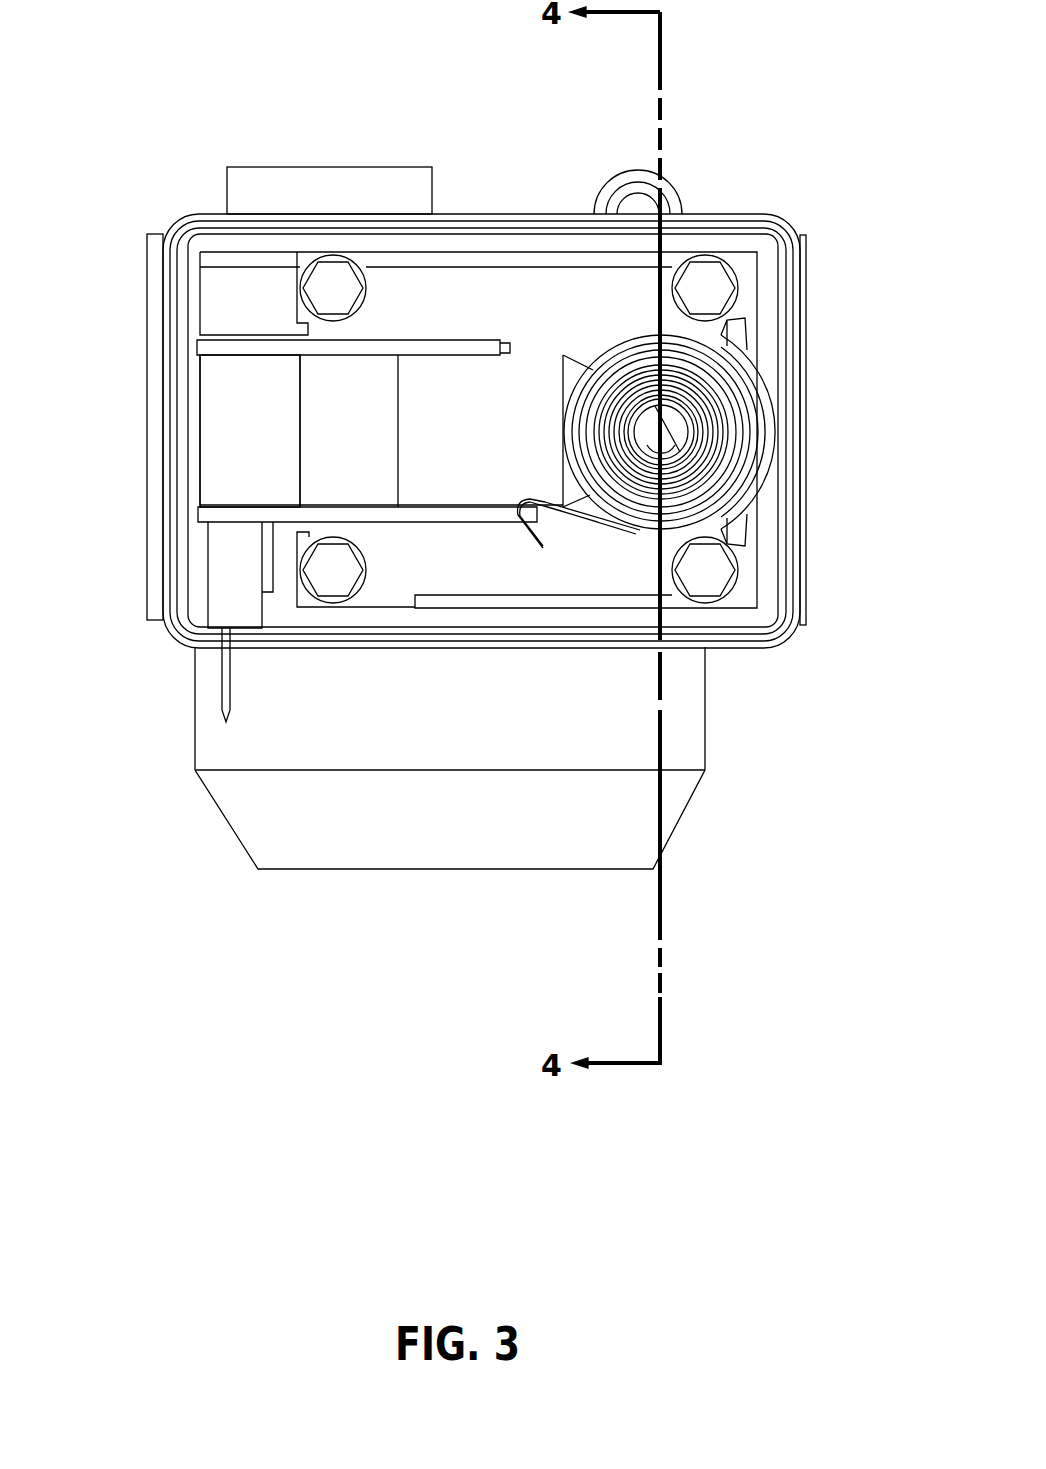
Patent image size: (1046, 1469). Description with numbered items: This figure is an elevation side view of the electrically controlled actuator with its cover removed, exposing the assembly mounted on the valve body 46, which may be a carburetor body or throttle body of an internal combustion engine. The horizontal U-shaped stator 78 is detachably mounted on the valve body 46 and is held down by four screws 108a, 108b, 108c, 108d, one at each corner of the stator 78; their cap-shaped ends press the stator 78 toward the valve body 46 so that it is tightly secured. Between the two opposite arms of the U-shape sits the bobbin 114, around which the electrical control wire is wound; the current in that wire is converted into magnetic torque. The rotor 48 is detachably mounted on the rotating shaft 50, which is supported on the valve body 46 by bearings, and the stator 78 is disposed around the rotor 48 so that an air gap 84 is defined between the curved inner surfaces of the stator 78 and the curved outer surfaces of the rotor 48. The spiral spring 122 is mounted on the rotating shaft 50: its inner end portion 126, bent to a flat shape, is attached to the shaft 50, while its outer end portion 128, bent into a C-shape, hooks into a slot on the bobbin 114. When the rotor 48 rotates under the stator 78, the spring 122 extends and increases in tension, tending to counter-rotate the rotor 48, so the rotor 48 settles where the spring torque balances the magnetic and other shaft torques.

The valve body 46 is at (808, 212).
The stator 78 is at (480, 262).
The bobbin 114 is at (282, 436).
The screw 108a is at (333, 540).
The screw 108b is at (740, 578).
The screw 108c is at (337, 262).
The screw 108d is at (721, 263).
The spiral spring 122 is at (761, 364).
The rotor 48 is at (763, 412).
The inner end portion 126 is at (668, 452).
The rotating shaft 50 is at (645, 427).
The outer end portion 128 is at (523, 535).
The air gap 84 is at (600, 508).